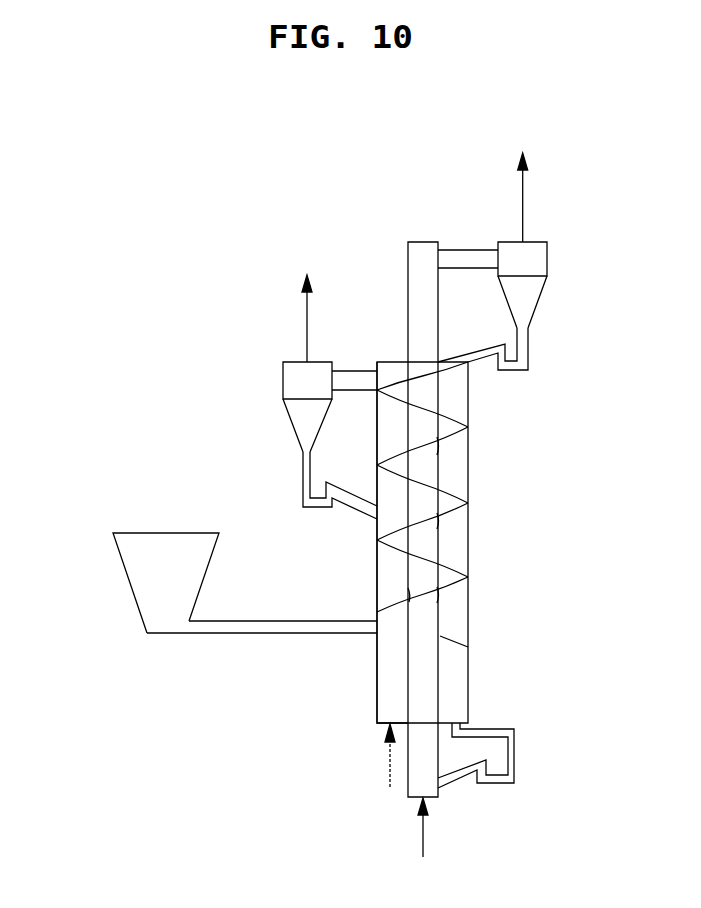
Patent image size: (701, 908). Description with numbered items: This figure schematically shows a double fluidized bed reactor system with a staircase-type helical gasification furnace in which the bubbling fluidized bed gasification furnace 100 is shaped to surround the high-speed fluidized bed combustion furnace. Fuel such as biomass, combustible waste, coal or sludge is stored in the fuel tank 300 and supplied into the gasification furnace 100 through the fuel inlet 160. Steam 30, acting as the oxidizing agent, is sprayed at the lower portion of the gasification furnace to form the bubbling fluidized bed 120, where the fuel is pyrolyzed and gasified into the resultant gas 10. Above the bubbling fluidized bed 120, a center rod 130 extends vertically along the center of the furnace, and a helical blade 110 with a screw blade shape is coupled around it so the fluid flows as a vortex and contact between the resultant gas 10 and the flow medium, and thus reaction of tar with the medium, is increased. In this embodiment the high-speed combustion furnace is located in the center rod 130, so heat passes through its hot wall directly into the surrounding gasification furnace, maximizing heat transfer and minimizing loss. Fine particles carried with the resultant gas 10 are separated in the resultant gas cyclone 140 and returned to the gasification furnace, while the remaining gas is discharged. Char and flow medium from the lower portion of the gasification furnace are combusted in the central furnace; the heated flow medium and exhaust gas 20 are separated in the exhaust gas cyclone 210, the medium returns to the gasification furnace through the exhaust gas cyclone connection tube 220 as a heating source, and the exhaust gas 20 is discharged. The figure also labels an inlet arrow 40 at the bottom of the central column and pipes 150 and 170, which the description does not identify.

The resultant gas 10 is at (310, 303).
The exhaust gas 20 is at (523, 181).
The steam 30 is at (390, 769).
The second fluidizing gas inlet 40 is at (423, 843).
The bubbling fluidized bed gasification furnace 100 is at (468, 605).
The helical blade 110 is at (452, 500).
The bubbling fluidized bed 120 is at (393, 691).
The center rod 130 is at (440, 681).
The resultant gas cyclone 140 is at (300, 430).
The first return pipe 150 is at (303, 483).
The fuel inlet 160 is at (288, 621).
The bottom return pipe 170 is at (516, 755).
The exhaust gas cyclone 210 is at (532, 309).
The exhaust gas cyclone connection tube 220 is at (528, 350).
The fuel tank 300 is at (129, 588).